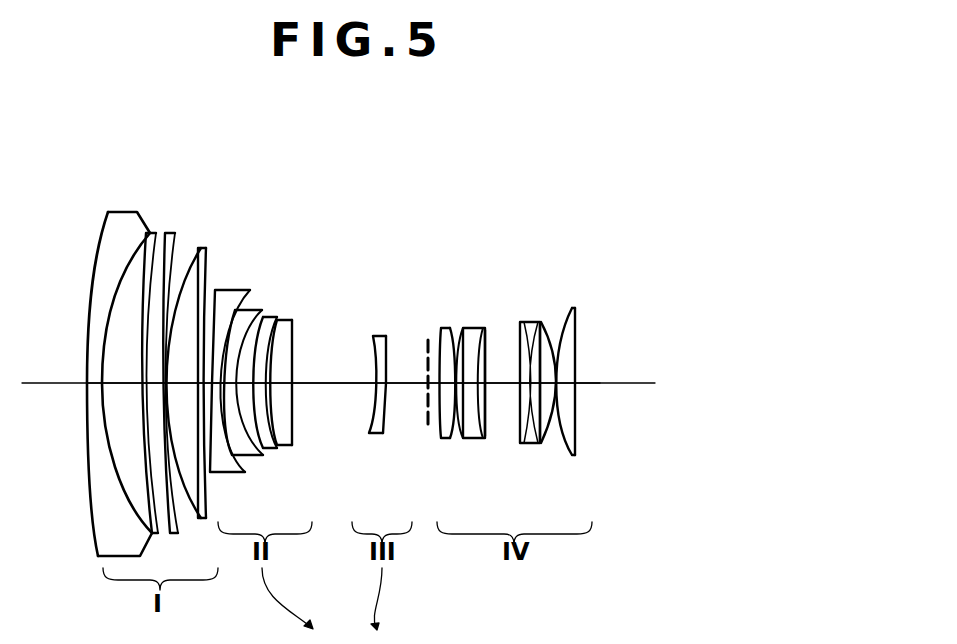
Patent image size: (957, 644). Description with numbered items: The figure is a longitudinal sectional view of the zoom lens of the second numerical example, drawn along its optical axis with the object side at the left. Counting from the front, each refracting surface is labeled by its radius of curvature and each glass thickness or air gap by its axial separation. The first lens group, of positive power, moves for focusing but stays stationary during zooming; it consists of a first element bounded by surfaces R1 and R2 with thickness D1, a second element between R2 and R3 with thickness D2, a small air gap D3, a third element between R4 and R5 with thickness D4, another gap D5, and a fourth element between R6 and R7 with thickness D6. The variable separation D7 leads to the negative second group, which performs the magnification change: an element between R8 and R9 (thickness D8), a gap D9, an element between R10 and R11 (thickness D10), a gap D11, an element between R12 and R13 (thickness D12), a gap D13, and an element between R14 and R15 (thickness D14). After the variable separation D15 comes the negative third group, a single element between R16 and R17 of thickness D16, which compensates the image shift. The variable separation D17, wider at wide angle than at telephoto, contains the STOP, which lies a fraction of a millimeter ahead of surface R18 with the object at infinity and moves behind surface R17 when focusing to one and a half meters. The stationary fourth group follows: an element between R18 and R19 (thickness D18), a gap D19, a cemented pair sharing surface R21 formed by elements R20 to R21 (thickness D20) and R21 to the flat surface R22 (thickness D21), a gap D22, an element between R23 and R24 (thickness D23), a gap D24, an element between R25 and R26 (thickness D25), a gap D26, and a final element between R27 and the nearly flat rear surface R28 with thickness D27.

The first lens surface R1 is at (100, 228).
The second lens surface R2 is at (132, 247).
The third lens surface R3 is at (150, 232).
The fourth lens surface R4 is at (167, 232).
The fifth lens surface R5 is at (177, 238).
The sixth lens surface R6 is at (199, 247).
The seventh lens surface R7 is at (213, 252).
The eighth lens surface R8 is at (216, 289).
The ninth lens surface R9 is at (236, 293).
The tenth lens surface R10 is at (258, 305).
The eleventh lens surface R11 is at (272, 310).
The twelfth lens surface R12 is at (274, 318).
The thirteenth lens surface R13 is at (285, 318).
The fourteenth lens surface R14 is at (290, 322).
The fifteenth lens surface R15 is at (294, 342).
The sixteenth lens surface R16 is at (375, 335).
The seventeenth lens surface R17 is at (386, 335).
The eighteenth lens surface R18 is at (440, 328).
The nineteenth lens surface R19 is at (449, 327).
The twentieth lens surface R20 is at (464, 327).
The twenty-first lens surface R21 is at (484, 327).
The twenty-second lens surface R22 is at (487, 330).
The twenty-third lens surface R23 is at (521, 320).
The twenty-fourth lens surface R24 is at (538, 320).
The twenty-fifth lens surface R25 is at (541, 322).
The twenty-sixth lens surface R26 is at (558, 318).
The twenty-seventh lens surface R27 is at (574, 308).
The twenty-eighth lens surface R28 is at (578, 330).
The first lens thickness D1 is at (88, 387).
The second axial thickness D2 is at (120, 390).
The third air separation D3 is at (161, 535).
The fourth lens thickness D4 is at (152, 390).
The fifth air separation D5 is at (186, 530).
The sixth lens thickness D6 is at (185, 390).
The seventh air separation D7 is at (210, 488).
The eighth lens thickness D8 is at (236, 470).
The ninth air separation D9 is at (250, 472).
The tenth lens thickness D10 is at (258, 460).
The eleventh air separation D11 is at (247, 388).
The twelfth lens thickness D12 is at (275, 470).
The thirteenth air separation D13 is at (285, 460).
The fourteenth lens thickness D14 is at (300, 420).
The fifteenth air separation D15 is at (328, 390).
The sixteenth lens thickness D16 is at (368, 412).
The seventeenth air separation D17 is at (392, 420).
The eighteenth lens thickness D18 is at (428, 425).
The nineteenth air separation D19 is at (450, 440).
The twentieth lens thickness D20 is at (470, 450).
The twenty-first lens thickness D21 is at (486, 450).
The twenty-second air separation D22 is at (507, 390).
The twenty-third lens thickness D23 is at (525, 455).
The twenty-fourth air separation D24 is at (540, 445).
The twenty-fifth lens thickness D25 is at (553, 450).
The twenty-sixth air separation D26 is at (562, 445).
The twenty-seventh lens thickness D27 is at (578, 420).
The stop STOP is at (419, 334).